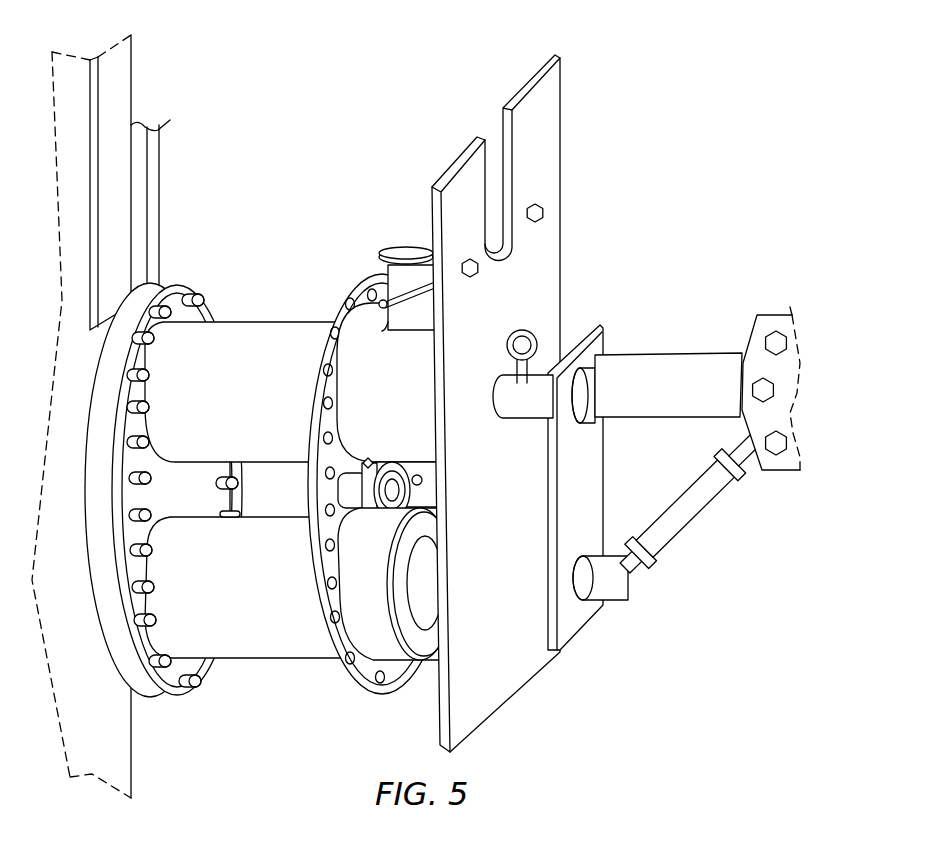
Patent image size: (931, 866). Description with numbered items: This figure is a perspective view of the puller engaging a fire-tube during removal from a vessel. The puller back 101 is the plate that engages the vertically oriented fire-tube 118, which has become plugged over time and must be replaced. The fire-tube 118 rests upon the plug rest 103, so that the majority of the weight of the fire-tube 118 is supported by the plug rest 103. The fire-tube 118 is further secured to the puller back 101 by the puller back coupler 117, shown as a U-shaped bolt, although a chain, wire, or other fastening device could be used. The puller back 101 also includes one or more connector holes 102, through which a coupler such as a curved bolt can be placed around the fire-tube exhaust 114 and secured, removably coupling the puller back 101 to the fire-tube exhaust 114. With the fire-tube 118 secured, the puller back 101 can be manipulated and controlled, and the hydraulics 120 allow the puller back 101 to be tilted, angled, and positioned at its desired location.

The puller back 101 is at (545, 248).
The connector holes 102 is at (540, 205).
The plug rest 103 is at (417, 573).
The fire-tube exhaust 114 is at (378, 248).
The puller back coupler 117 is at (408, 305).
The fire-tube 118 is at (278, 320).
The hydraulics 120 is at (696, 353).